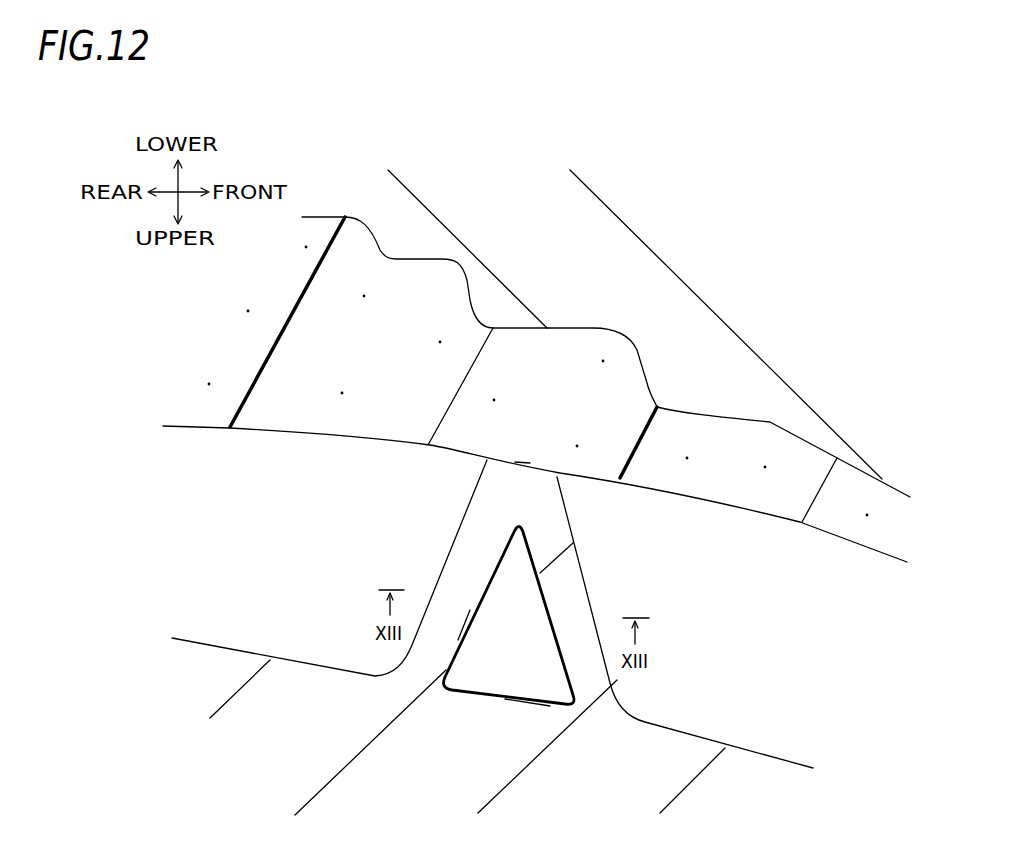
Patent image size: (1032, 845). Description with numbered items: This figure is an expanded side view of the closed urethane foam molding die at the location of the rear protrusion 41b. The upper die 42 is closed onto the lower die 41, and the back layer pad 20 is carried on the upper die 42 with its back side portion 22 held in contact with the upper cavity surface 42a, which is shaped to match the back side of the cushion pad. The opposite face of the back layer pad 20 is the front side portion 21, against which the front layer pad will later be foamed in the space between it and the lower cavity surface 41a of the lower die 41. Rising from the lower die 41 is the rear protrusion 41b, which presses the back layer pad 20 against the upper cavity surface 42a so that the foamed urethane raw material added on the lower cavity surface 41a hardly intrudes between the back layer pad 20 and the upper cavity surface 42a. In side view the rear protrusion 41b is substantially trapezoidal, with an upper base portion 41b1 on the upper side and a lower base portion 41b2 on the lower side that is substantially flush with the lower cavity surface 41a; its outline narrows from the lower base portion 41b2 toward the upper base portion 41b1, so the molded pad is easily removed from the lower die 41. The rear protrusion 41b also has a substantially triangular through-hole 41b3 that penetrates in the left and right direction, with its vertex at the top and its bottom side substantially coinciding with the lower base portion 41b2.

The back layer pad 20 is at (243, 342).
The front side portion 21 is at (366, 438).
The back side portion 22 is at (572, 332).
The upper die 42 is at (419, 232).
The upper cavity surface 42a is at (428, 260).
The lower die 41 is at (510, 752).
The lower cavity surface 41a is at (737, 750).
The rear protrusion 41b is at (583, 558).
The upper base portion 41b1 is at (522, 460).
The lower base portion 41b2 is at (528, 712).
The through-hole 41b3 is at (470, 625).